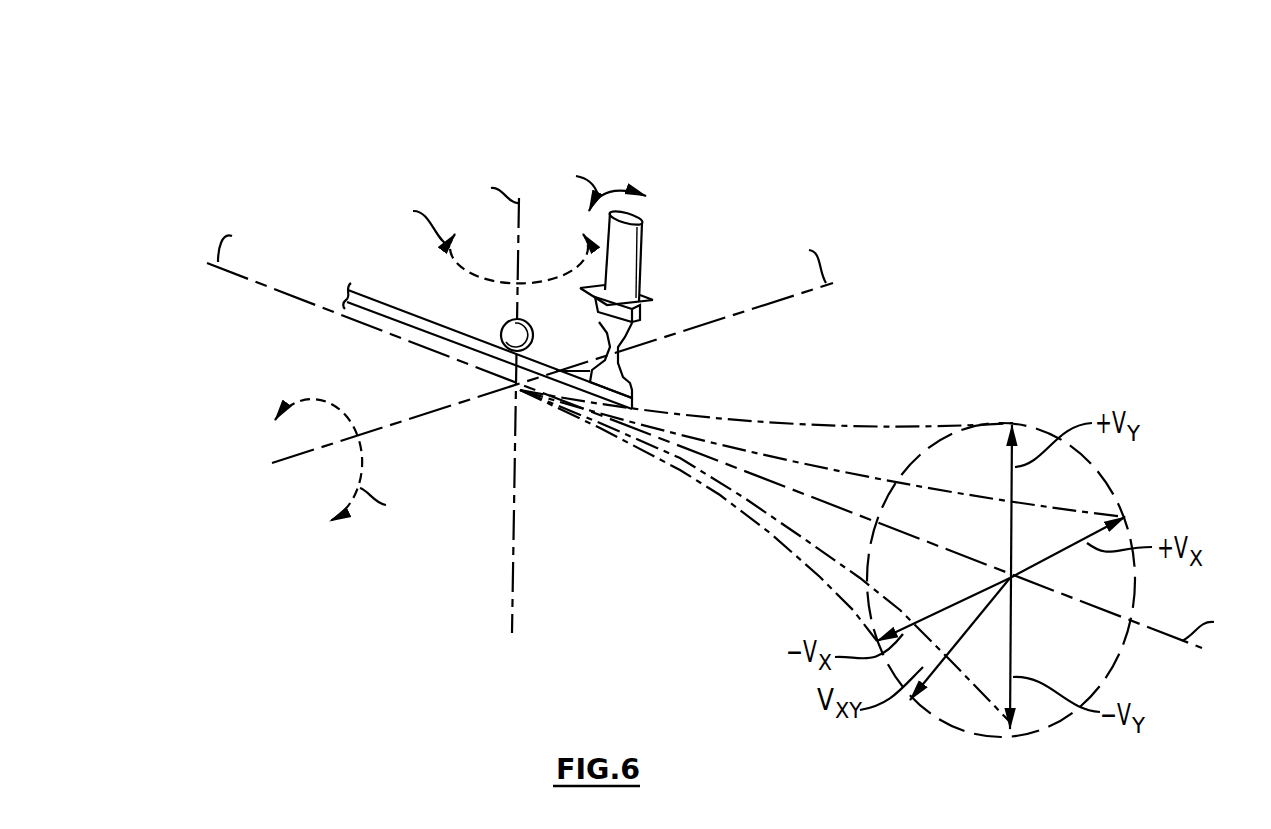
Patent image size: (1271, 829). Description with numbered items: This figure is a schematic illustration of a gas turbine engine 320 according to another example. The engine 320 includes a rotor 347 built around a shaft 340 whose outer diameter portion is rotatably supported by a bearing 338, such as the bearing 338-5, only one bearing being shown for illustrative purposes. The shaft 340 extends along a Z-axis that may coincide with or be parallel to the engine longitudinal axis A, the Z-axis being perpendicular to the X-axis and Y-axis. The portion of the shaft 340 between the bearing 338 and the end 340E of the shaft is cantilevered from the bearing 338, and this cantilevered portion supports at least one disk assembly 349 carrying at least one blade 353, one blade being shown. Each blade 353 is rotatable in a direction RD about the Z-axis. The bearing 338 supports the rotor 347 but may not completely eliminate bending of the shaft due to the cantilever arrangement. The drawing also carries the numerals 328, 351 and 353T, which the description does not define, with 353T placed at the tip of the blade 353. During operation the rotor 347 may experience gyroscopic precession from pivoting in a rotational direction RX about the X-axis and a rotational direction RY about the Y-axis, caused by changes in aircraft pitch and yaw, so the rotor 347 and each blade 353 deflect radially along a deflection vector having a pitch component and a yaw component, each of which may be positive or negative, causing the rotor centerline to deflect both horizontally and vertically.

The gas turbine engine 320 is at (372, 100).
The rotational motion indicators 328 is at (478, 131).
The bearing 338 is at (413, 352).
The bearing 338-5 is at (413, 352).
The shaft 340 is at (521, 319).
The end of the shaft 340E is at (634, 404).
The rotor 347 is at (629, 230).
The disk assembly 349 is at (600, 347).
The sensor head 351 is at (664, 222).
The blade 353 is at (665, 212).
The tip of cylindrical body 353T is at (621, 212).